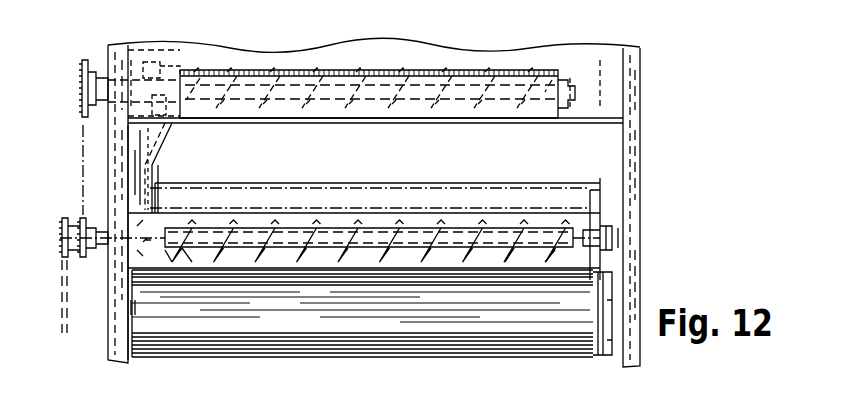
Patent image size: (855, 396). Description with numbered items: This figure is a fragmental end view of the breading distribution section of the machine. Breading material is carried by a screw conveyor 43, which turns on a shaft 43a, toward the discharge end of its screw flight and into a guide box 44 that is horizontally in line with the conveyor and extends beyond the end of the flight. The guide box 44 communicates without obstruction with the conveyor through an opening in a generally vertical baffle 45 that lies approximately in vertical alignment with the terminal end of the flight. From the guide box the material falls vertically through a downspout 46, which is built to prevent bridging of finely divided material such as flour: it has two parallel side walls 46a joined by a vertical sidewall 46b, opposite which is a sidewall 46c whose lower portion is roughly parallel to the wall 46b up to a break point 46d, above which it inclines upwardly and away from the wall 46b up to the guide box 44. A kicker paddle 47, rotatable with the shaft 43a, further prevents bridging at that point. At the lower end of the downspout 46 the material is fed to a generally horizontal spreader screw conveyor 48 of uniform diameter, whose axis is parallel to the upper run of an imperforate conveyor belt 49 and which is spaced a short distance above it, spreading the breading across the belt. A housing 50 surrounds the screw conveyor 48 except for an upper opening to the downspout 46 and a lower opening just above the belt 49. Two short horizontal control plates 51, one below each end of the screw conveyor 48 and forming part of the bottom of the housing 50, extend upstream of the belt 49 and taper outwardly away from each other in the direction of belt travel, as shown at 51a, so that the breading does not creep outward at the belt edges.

The screw conveyor 43 is at (373, 116).
The shaft of conveyor 43a is at (312, 68).
The guide box 44 is at (112, 113).
The vertical baffle 45 is at (190, 52).
The downspout 46 is at (172, 141).
The parallel side walls 46a is at (138, 137).
The vertical sidewall 46b is at (107, 182).
The sidewall 46c is at (160, 183).
The break point 46d is at (160, 167).
The kicker paddle 47 is at (147, 62).
The screw conveyor 48 is at (375, 253).
The conveyor belt 49 is at (355, 358).
The housing 50 is at (600, 232).
The control plates 51 is at (183, 262).
The outward taper of plates 51a is at (200, 260).